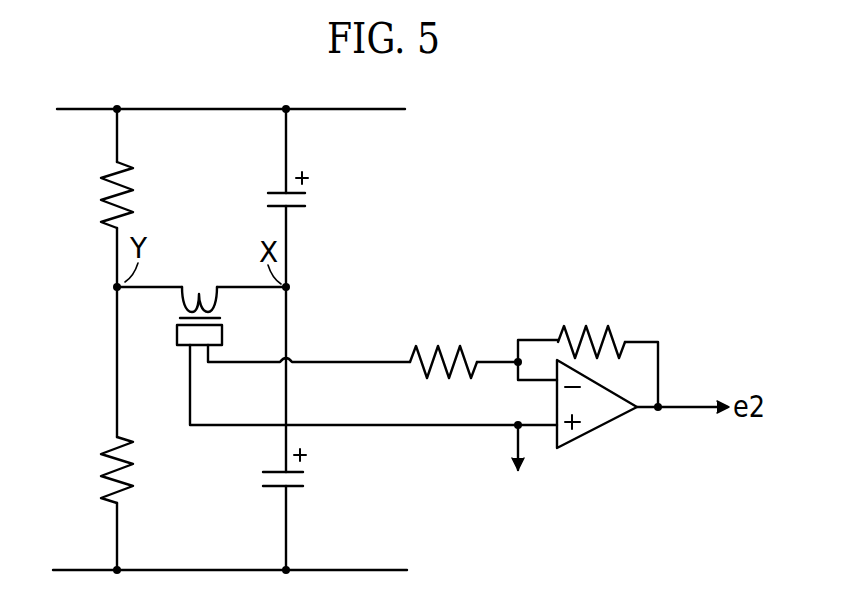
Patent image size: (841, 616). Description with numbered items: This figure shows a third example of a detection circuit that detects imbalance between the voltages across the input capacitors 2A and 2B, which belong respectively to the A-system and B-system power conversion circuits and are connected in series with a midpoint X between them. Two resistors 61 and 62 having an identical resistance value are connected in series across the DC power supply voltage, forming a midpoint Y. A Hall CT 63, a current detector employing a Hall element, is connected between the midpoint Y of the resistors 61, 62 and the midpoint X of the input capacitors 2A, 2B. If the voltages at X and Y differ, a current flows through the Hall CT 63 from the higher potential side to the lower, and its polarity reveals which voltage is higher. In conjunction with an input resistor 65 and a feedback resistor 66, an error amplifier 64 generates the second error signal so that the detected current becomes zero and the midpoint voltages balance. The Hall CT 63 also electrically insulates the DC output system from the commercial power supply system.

The resistor 61 is at (100, 212).
The resistor 62 is at (99, 488).
The Hall CT 63 is at (193, 292).
The input capacitor 2A is at (298, 208).
The input capacitor 2B is at (296, 487).
The error amplifier 64 is at (612, 420).
The input resistor 65 is at (457, 360).
The feedback resistor 66 is at (603, 336).